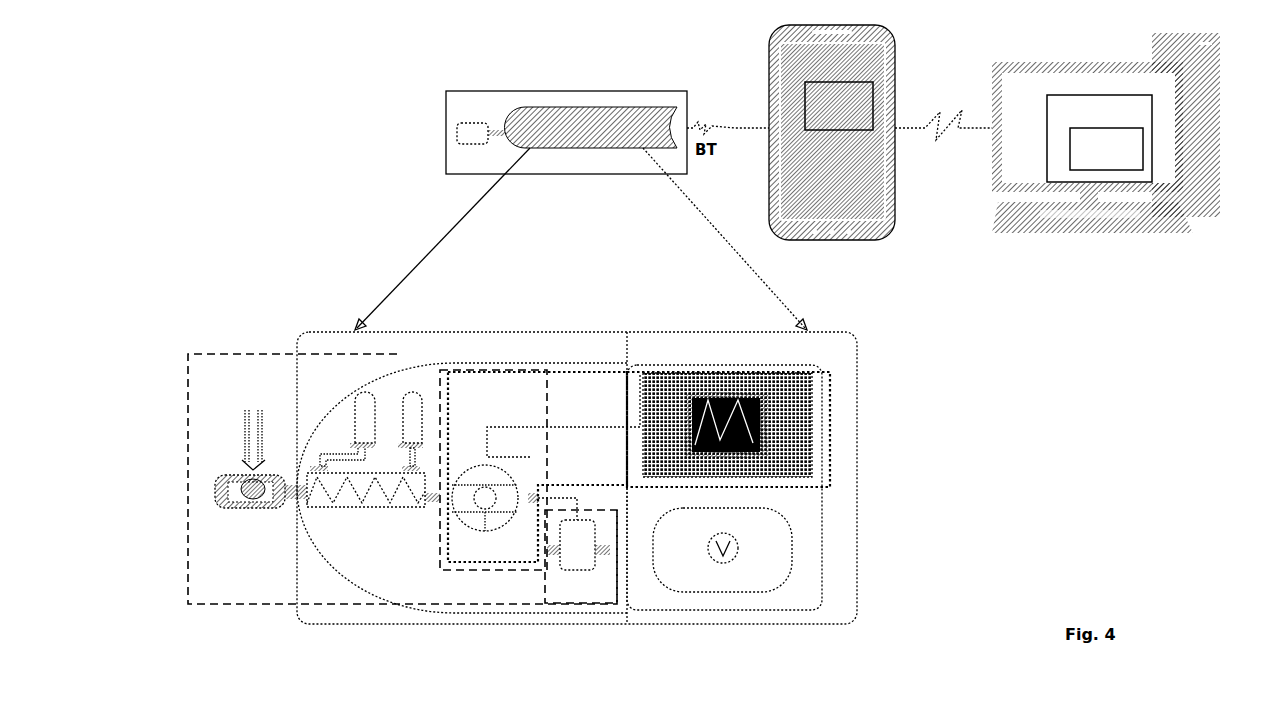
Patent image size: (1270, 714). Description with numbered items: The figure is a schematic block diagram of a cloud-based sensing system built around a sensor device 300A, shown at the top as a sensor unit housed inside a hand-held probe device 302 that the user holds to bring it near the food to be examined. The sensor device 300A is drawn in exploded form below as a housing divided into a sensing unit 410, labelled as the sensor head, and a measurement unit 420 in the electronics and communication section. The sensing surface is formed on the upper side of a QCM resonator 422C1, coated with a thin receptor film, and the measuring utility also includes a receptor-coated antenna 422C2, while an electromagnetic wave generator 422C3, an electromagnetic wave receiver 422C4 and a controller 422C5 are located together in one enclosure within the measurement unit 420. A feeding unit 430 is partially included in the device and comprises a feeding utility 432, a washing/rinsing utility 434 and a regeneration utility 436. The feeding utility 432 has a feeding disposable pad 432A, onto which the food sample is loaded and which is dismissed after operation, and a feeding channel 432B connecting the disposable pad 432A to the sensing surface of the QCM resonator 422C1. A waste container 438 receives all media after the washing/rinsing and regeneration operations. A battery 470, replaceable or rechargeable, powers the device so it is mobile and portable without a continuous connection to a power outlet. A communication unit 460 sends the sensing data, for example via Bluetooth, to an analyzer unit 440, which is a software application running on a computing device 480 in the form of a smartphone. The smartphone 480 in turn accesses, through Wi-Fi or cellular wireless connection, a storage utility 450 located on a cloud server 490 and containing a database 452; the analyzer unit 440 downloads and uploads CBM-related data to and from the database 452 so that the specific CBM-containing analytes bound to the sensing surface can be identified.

The sensor device 300A is at (565, 108).
The hand-held probe device 302 is at (447, 120).
The computing device 480 is at (768, 62).
The analyzer unit 440 is at (839, 106).
The cloud server 490 is at (1027, 72).
The storage utility 450 is at (1099, 138).
The database 452 is at (1106, 149).
The sensing unit 410 is at (532, 338).
The feeding unit 430 is at (213, 353).
The feeding utility 432 is at (282, 545).
The feeding disposable pad 432A is at (233, 477).
The feeding channel 432B is at (410, 507).
The regeneration utility 436 is at (363, 415).
The washing/rinsing utility 434 is at (413, 418).
The QCM resonator 422C1 is at (510, 500).
The antenna 422C2 is at (522, 457).
The waste container 438 is at (572, 555).
The measurement unit 420 is at (830, 443).
The communication unit 460 is at (727, 425).
The controller 422C5 is at (771, 386).
The electromagnetic wave generator 422C3 is at (679, 471).
The electromagnetic wave receiver 422C4 is at (771, 471).
The battery 470 is at (748, 593).